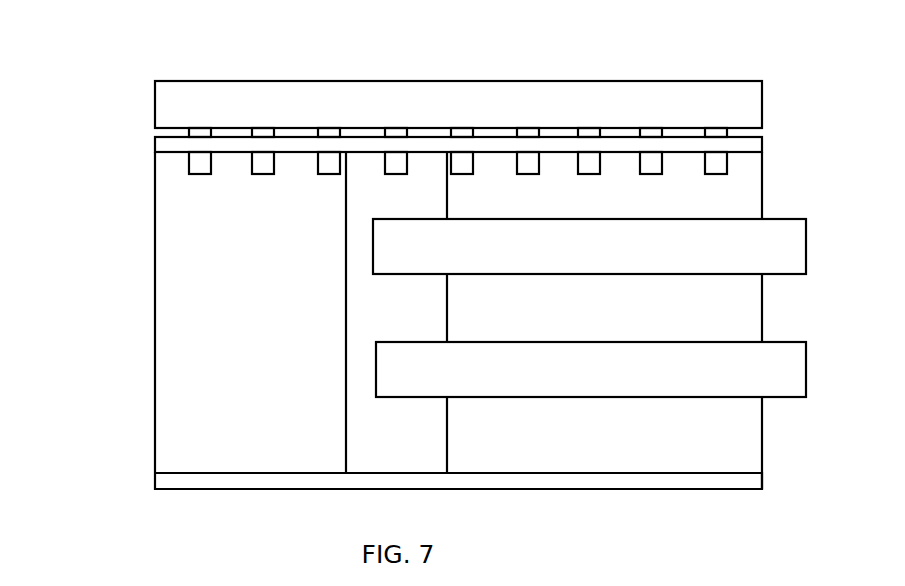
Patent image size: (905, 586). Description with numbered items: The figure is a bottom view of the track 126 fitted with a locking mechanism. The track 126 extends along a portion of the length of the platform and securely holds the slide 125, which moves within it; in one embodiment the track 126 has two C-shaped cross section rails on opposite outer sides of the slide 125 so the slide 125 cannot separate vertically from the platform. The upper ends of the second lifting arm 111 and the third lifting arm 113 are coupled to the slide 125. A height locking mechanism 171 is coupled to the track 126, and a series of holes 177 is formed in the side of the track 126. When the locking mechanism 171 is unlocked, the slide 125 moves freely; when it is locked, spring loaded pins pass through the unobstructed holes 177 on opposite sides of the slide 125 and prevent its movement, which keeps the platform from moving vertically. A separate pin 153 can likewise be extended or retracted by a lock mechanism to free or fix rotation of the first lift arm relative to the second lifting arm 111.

The height locking mechanism 171 is at (507, 100).
The holes 177 is at (383, 136).
The pin 153 is at (263, 162).
The track 126 is at (167, 307).
The slide 125 is at (353, 332).
The third lifting arm 113 is at (790, 271).
The second lifting arm 111 is at (795, 390).